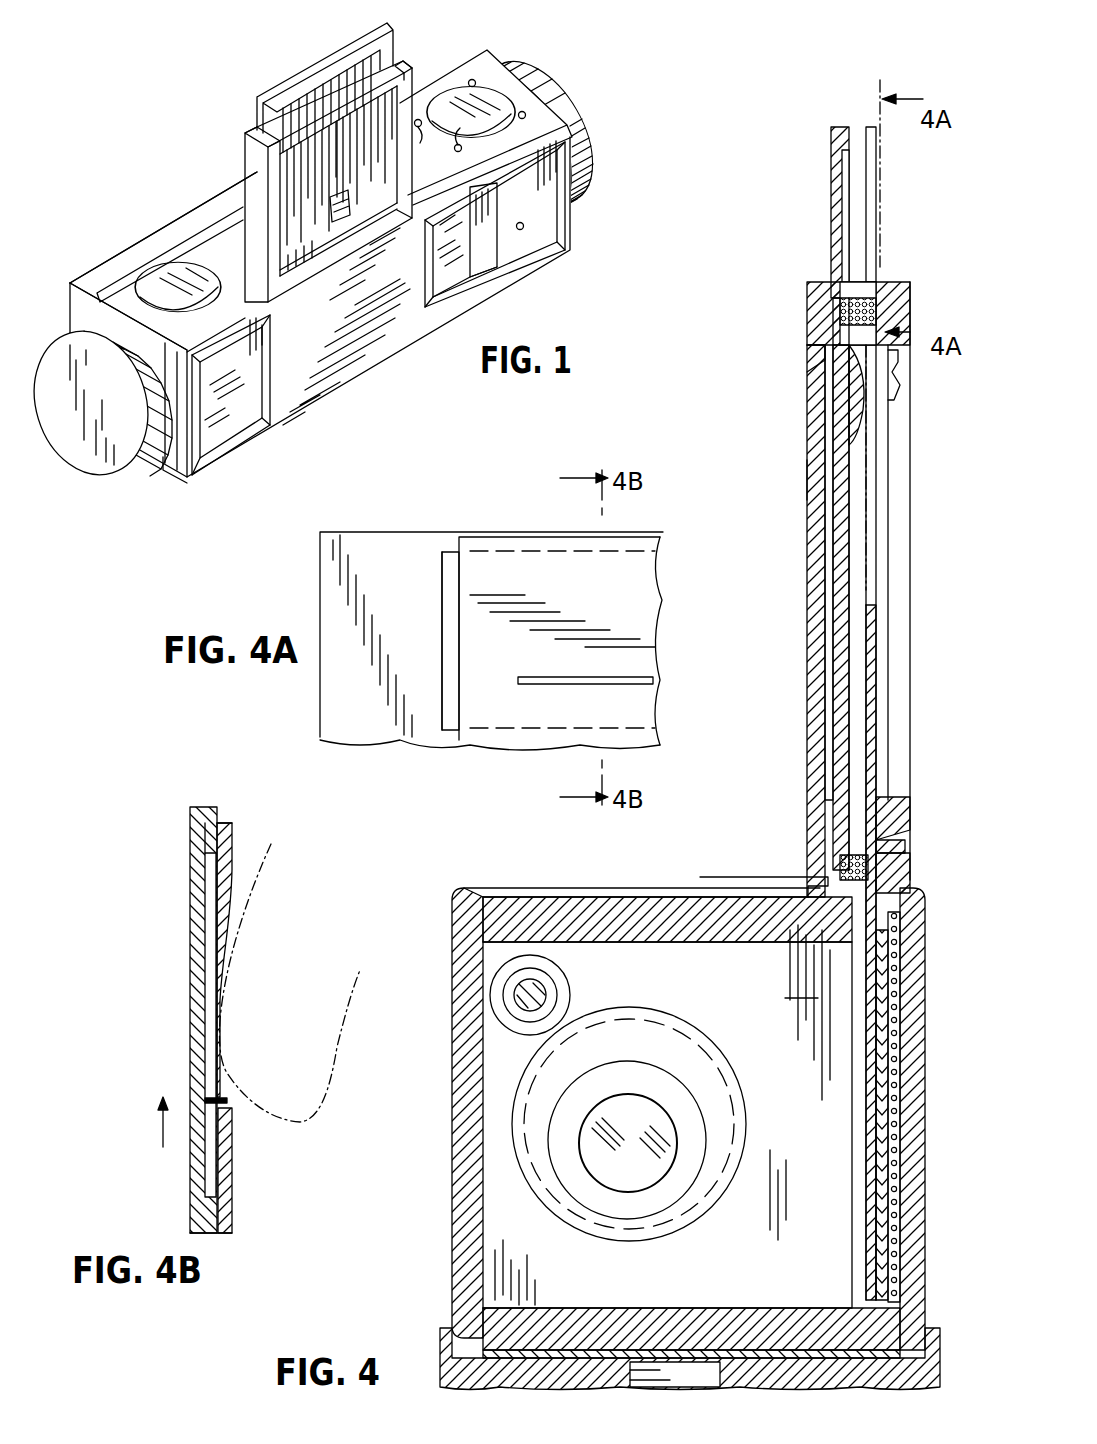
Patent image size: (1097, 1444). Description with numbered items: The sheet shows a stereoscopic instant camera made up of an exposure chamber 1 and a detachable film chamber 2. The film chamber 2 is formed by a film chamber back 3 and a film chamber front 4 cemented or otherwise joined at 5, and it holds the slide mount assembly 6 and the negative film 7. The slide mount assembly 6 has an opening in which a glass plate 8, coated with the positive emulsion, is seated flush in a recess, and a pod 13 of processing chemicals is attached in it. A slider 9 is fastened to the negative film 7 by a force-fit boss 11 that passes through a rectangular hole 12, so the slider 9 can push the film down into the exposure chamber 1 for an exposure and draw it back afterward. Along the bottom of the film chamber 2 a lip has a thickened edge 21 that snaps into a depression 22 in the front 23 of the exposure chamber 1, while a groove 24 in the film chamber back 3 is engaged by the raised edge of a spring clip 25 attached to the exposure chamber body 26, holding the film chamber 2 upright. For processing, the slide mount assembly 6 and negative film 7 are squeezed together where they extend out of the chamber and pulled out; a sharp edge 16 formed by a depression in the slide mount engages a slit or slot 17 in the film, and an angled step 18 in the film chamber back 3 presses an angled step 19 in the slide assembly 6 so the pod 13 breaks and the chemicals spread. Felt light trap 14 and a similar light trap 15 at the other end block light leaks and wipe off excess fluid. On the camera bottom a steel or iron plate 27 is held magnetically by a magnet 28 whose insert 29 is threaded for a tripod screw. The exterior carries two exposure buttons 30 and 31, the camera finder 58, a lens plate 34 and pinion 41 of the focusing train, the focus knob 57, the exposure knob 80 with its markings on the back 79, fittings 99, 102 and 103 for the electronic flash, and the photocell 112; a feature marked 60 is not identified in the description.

In FIG. 1, the exposure chamber 1 is at (381, 326).
In FIG. 4, the exposure chamber 1 is at (702, 1007).
In FIG. 1, the film chamber 2 is at (228, 153).
In FIG. 4, the film chamber 2 is at (790, 479).
In FIG. 1, the film chamber back 3 is at (245, 134).
In FIG. 4, the film chamber front 4 is at (858, 485).
In FIG. 1, the joint 5 is at (412, 78).
In FIG. 1, the slide mount assembly 6 is at (396, 42).
In FIG. 4, the slide mount assembly 6 is at (833, 240).
In FIG. 4A, the slide mount assembly 6 is at (392, 545).
In FIG. 4B, the slide mount assembly 6 is at (196, 858).
In FIG. 4, the negative film 7 is at (872, 642).
In FIG. 4A, the negative film 7 is at (637, 592).
In FIG. 4B, the negative film 7 is at (228, 868).
In FIG. 4, the glass plate 8 is at (835, 540).
In FIG. 4, the slider 9 is at (893, 817).
In FIG. 4, the boss 11 is at (905, 850).
In FIG. 4, the rectangular hole 12 is at (882, 832).
In FIG. 4, the pod 13 is at (850, 428).
In FIG. 4, the light trap 14 is at (840, 310).
In FIG. 4, the light trap 15 is at (840, 868).
In FIG. 4, the sharp edge 16 is at (835, 340).
In FIG. 4A, the sharp edge 16 is at (442, 612).
In FIG. 4B, the sharp edge 16 is at (222, 845).
In FIG. 4A, the slit or slot 17 is at (640, 678).
In FIG. 4B, the slit or slot 17 is at (224, 1100).
In FIG. 4, the angled step 18 is at (856, 408).
In FIG. 4, the angled step 19 is at (812, 355).
In FIG. 4, the thickened edge 21 is at (926, 903).
In FIG. 4, the depression 22 is at (841, 205).
In FIG. 4A, the depression 22 is at (450, 712).
In FIG. 4B, the depression 22 is at (210, 893).
In FIG. 1, the front 23 is at (183, 468).
In FIG. 4, the front 23 is at (912, 1075).
In FIG. 4, the groove 24 is at (820, 880).
In FIG. 1, the spring clip 25 is at (208, 240).
In FIG. 4, the spring clip 25 is at (705, 897).
In FIG. 1, the exposure chamber body 26 is at (108, 283).
In FIG. 4, the exposure chamber body 26 is at (582, 908).
In FIG. 4, the steel or iron plate 27 is at (558, 1322).
In FIG. 4, the magnet 28 is at (447, 1360).
In FIG. 4, the insert 29 is at (740, 1335).
In FIG. 1, the exposure button 30 is at (162, 268).
In FIG. 1, the exposure button 31 is at (460, 95).
In FIG. 4, the lens plate 34 is at (801, 985).
In FIG. 4, the pinion shaft 41 is at (565, 992).
In FIG. 1, the focus knob 57 is at (105, 458).
In FIG. 1, the camera finder 58 is at (512, 188).
In FIG. 1, the screws 60 is at (438, 146).
In FIG. 4, the back 79 is at (452, 965).
In FIG. 1, the exposure knob 80 is at (357, 258).
In FIG. 1, the fitting 99 is at (548, 98).
In FIG. 1, the fitting 102 is at (528, 118).
In FIG. 1, the fitting 103 is at (476, 81).
In FIG. 1, the photocell 112 is at (524, 228).